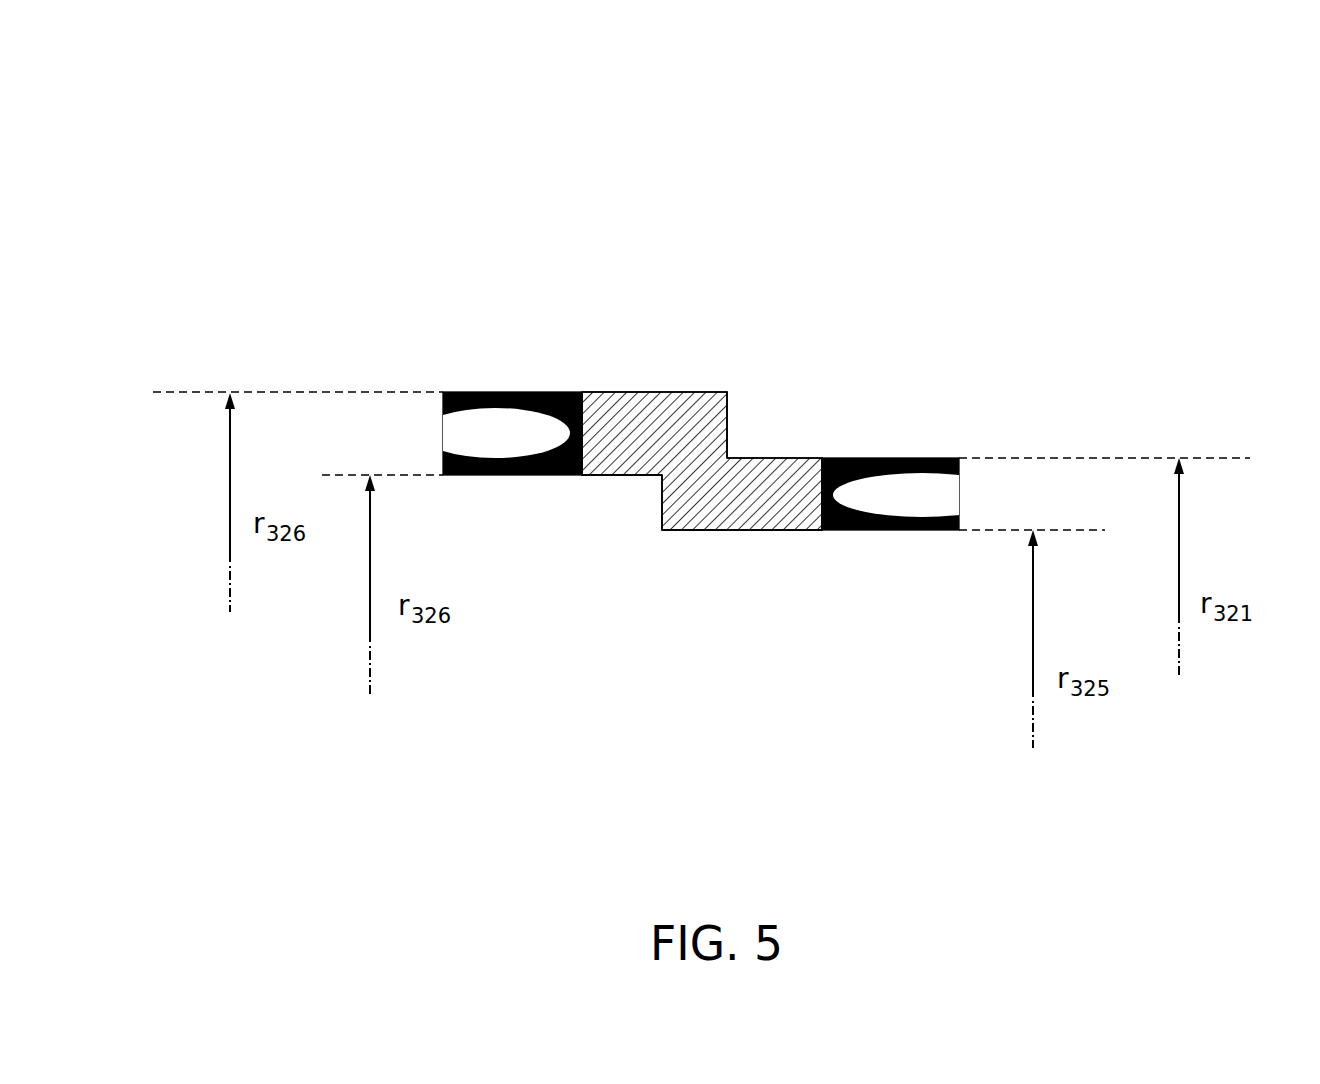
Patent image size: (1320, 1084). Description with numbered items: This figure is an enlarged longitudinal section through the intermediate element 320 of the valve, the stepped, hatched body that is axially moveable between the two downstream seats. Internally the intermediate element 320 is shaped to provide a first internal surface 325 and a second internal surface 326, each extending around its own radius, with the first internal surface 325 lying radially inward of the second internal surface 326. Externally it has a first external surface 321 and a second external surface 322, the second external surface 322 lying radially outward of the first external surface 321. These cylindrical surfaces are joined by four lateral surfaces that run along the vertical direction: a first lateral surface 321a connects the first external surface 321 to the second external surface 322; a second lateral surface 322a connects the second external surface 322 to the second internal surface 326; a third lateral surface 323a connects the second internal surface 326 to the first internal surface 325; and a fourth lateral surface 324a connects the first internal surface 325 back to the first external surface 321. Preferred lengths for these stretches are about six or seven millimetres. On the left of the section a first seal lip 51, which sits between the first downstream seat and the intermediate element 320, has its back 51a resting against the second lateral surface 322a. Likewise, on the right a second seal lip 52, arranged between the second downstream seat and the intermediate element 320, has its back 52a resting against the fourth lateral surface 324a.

The intermediate element 320 is at (797, 142).
The first external surface 321 is at (790, 458).
The first lateral surface 321a is at (728, 415).
The second external surface 322 is at (655, 393).
The second lateral surface 322a is at (585, 440).
The third lateral surface 323a is at (660, 507).
The fourth lateral surface 324a is at (800, 510).
The first internal surface 325 is at (702, 530).
The second internal surface 326 is at (598, 475).
The first seal lip 51 is at (483, 393).
The back of the first seal lip 51a is at (584, 406).
The second seal lip 52 is at (920, 458).
The back of the second seal lip 52a is at (818, 472).